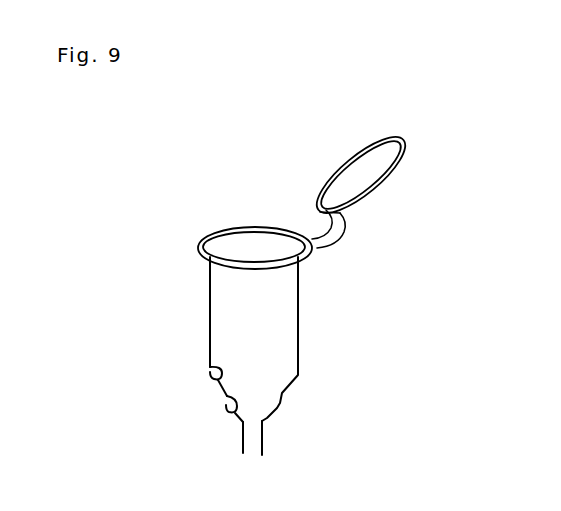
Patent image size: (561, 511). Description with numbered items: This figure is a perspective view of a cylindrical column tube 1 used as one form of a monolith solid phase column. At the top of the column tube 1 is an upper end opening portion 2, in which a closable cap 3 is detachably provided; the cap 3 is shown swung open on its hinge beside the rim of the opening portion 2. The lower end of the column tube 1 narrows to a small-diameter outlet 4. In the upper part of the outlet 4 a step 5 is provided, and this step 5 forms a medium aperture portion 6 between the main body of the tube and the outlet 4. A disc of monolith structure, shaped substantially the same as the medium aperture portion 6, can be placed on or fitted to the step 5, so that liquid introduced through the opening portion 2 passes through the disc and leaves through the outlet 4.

The column tube 1 is at (208, 305).
The upper end opening portion 2 is at (272, 244).
The closable cap 3 is at (393, 173).
The small-diameter outlet 4 is at (252, 455).
The step 5 is at (210, 367).
The medium aperture portion 6 is at (233, 415).